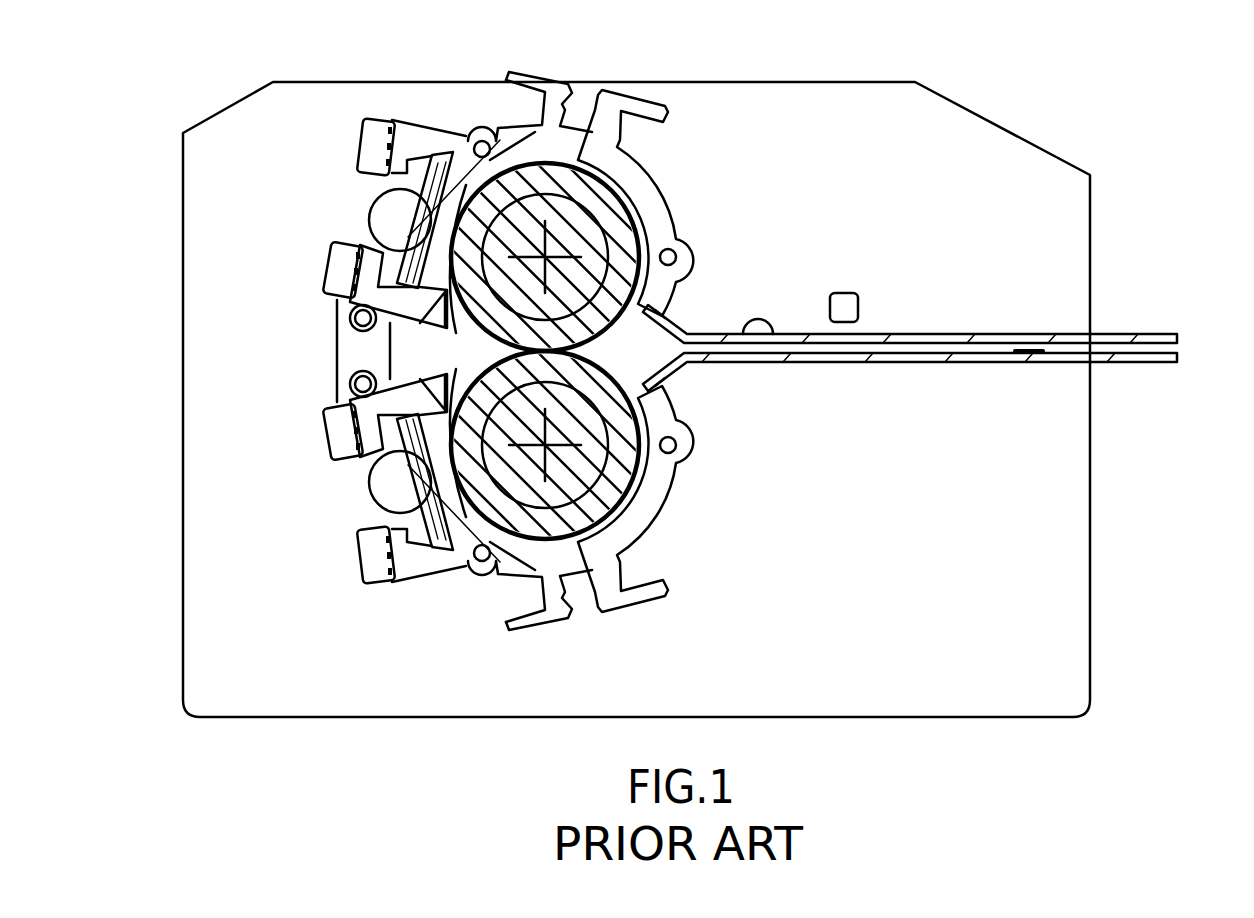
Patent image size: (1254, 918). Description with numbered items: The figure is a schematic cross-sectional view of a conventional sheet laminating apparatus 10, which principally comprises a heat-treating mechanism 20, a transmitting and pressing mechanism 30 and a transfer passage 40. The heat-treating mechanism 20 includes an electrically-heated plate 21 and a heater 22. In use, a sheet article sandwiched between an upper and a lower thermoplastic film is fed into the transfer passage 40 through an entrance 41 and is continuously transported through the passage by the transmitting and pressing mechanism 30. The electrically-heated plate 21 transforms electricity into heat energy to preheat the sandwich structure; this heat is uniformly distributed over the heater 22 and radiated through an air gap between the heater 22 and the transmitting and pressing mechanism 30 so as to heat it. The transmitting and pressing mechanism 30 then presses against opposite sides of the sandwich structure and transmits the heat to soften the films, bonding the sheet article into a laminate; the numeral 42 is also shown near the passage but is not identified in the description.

The image forming apparatus 10 is at (1018, 62).
The fixing device 20 is at (519, 333).
The heater 21 is at (433, 148).
The frame 22 is at (623, 170).
The fixing roller 30 is at (593, 260).
The recording sheet 40 is at (592, 350).
The conveying direction 41 is at (488, 350).
The conveying direction 42 is at (627, 342).